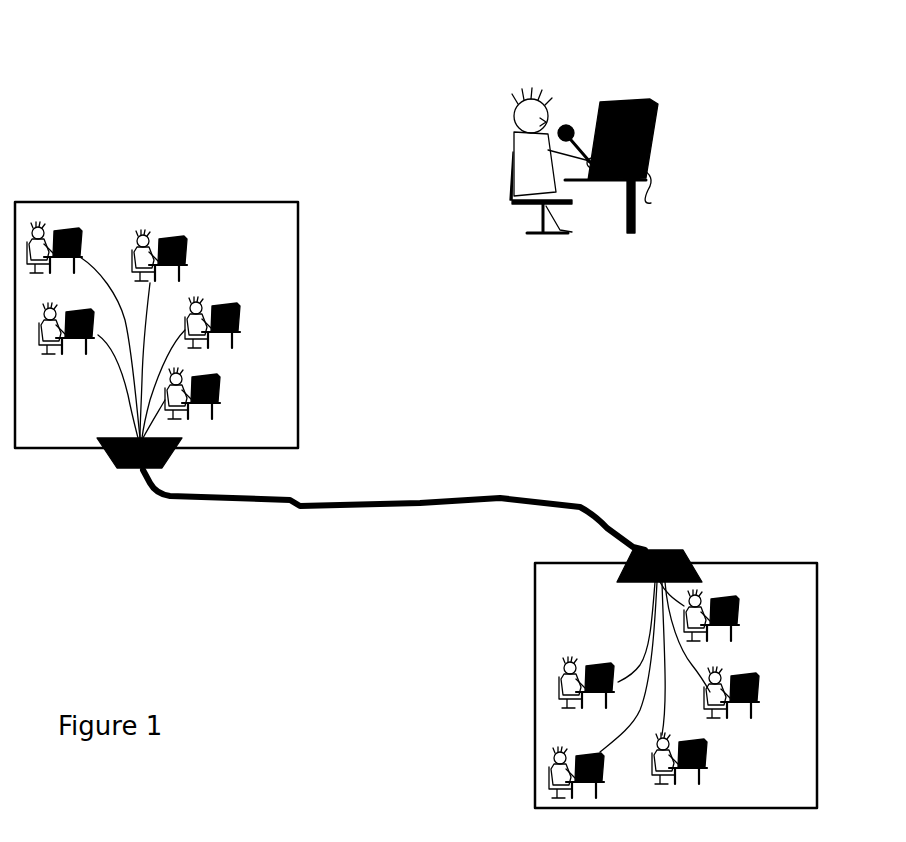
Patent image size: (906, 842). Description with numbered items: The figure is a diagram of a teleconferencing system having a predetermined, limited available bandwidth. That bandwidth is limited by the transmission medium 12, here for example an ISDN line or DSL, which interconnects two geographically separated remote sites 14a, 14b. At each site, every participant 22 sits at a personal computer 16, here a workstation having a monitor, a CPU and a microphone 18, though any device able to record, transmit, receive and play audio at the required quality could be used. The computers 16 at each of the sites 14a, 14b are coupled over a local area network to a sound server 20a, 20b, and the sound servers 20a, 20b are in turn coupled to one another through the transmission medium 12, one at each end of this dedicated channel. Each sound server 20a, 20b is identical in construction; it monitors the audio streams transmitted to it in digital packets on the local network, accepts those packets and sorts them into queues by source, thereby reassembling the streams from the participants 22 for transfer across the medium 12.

The transmission medium 12 is at (327, 522).
The remote site 14a is at (302, 363).
The remote site 14b is at (528, 695).
The personal computer 16 is at (672, 138).
The microphone 18 is at (568, 120).
The sound server 20a is at (114, 480).
The sound server 20b is at (685, 543).
The participant 22 is at (497, 105).